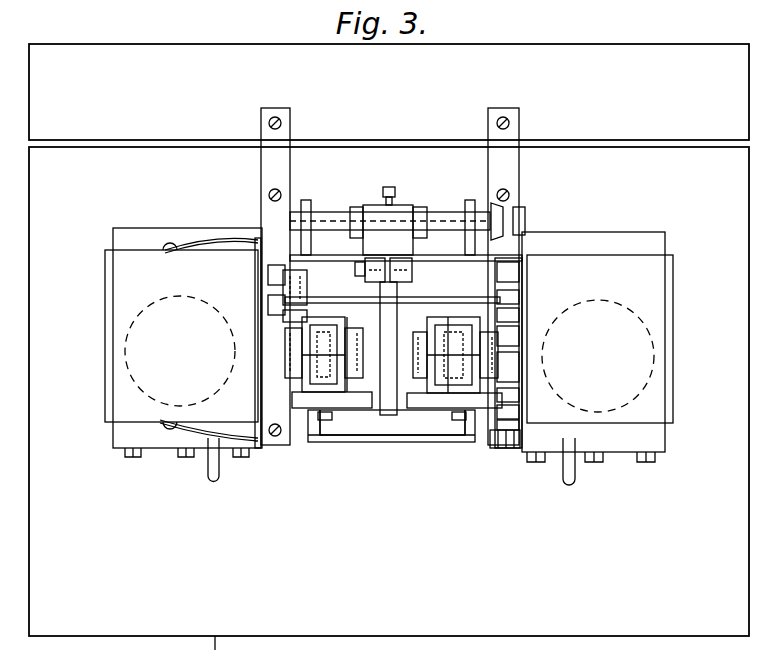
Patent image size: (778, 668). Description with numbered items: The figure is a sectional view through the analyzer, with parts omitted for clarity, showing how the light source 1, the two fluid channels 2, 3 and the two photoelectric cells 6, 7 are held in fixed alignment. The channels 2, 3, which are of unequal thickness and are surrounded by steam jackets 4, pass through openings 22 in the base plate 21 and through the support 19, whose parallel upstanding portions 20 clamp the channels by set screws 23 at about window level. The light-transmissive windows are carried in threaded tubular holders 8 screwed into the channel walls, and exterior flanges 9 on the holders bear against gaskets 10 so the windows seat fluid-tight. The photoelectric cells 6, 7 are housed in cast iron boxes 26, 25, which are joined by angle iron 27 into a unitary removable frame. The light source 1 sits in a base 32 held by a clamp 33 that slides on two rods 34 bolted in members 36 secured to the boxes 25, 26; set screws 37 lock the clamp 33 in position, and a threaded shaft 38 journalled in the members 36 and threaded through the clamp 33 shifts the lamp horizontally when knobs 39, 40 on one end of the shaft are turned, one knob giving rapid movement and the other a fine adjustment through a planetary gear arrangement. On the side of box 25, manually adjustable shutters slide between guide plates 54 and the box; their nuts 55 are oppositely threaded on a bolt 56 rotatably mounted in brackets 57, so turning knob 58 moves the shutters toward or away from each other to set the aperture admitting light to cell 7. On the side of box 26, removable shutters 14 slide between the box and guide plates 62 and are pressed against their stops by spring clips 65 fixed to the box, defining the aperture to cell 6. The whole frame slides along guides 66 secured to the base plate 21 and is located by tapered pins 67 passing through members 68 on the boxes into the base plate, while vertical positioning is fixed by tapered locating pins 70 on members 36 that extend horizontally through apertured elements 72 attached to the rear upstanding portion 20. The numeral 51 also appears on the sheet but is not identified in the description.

The source of ultraviolet light 1 is at (373, 440).
The fluid channel 2 is at (305, 383).
The fluid channel 3 is at (450, 440).
The steam jacket 4 is at (286, 303).
The photoelectric cell 6 is at (153, 306).
The photoelectric cell 7 is at (643, 306).
The tubular holder 8 is at (287, 358).
The exterior flange 9 is at (348, 317).
The gasket 10 is at (322, 318).
The removable shutter 14 is at (257, 240).
The support 19 is at (362, 436).
The upstanding portion 20 is at (308, 275).
The base plate 21 is at (91, 636).
The opening 22 is at (423, 297).
The set screw 23 is at (327, 422).
The box 25 is at (621, 232).
The box 26 is at (105, 266).
The angle iron 27 is at (132, 228).
The base 32 is at (410, 282).
The clamp 33 is at (403, 220).
The rod 34 is at (334, 212).
The member 36 is at (306, 200).
The set screw 37 is at (389, 187).
The threaded shaft 38 is at (327, 212).
The knob 39 is at (505, 210).
The knob 40 is at (526, 216).
The base 51 is at (218, 652).
The guide plate 54 is at (520, 314).
The nut 55 is at (520, 334).
The threaded bolt 56 is at (520, 395).
The bracket 57 is at (520, 424).
The knob 58 is at (508, 449).
The guide plate 62 is at (268, 275).
The spring clip 65 is at (222, 240).
The guide 66 is at (261, 119).
The tapered locating pin 67 is at (159, 443).
The member 68 is at (623, 476).
The tapered locating pin 70 is at (285, 318).
The element 72 is at (268, 303).